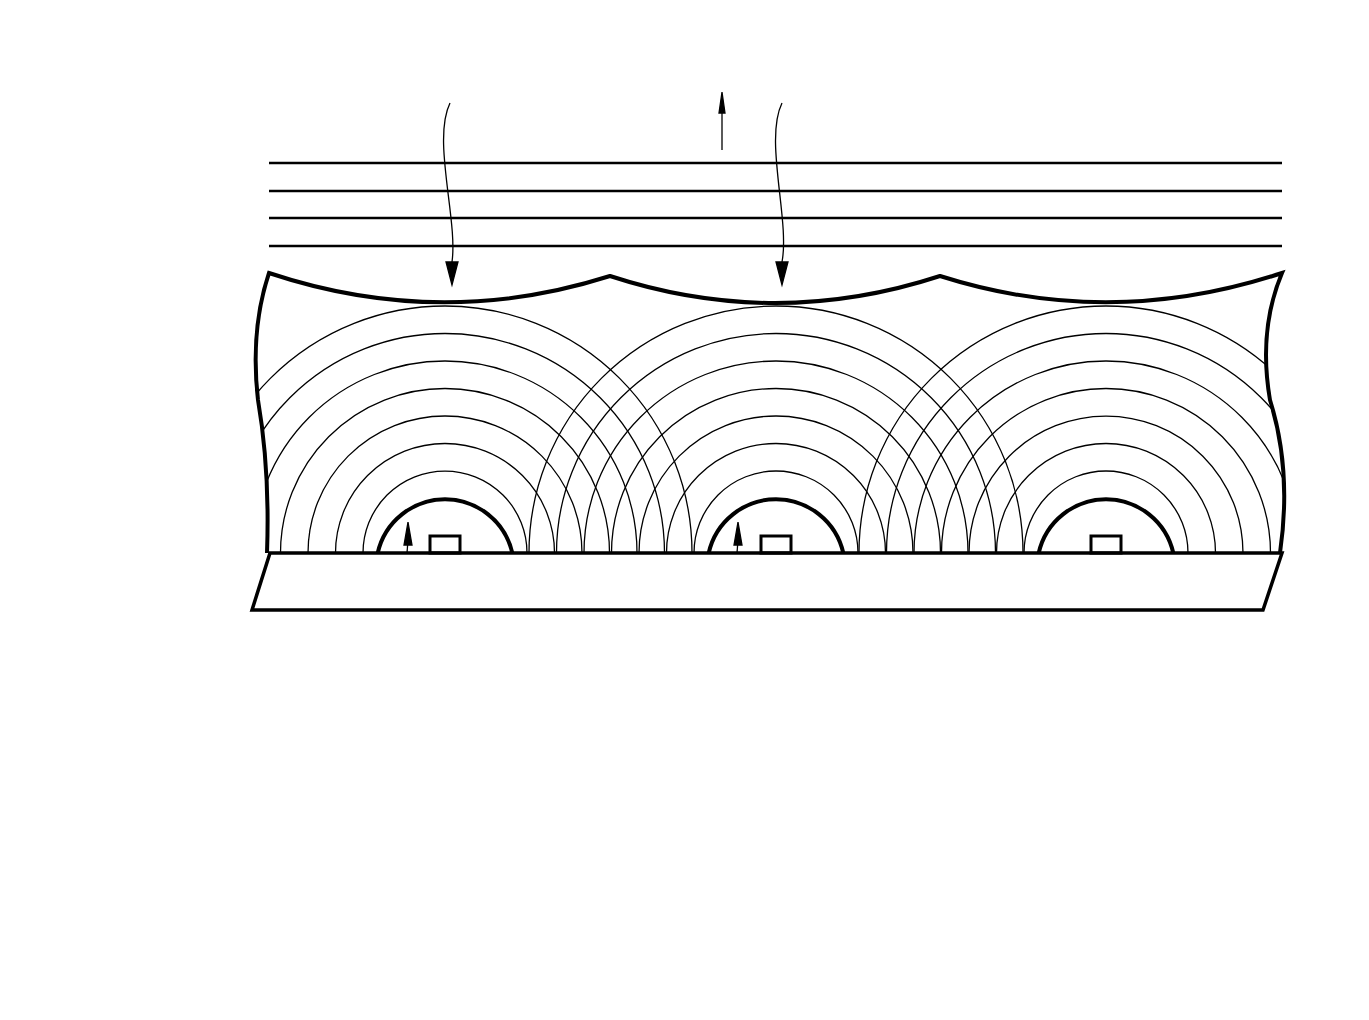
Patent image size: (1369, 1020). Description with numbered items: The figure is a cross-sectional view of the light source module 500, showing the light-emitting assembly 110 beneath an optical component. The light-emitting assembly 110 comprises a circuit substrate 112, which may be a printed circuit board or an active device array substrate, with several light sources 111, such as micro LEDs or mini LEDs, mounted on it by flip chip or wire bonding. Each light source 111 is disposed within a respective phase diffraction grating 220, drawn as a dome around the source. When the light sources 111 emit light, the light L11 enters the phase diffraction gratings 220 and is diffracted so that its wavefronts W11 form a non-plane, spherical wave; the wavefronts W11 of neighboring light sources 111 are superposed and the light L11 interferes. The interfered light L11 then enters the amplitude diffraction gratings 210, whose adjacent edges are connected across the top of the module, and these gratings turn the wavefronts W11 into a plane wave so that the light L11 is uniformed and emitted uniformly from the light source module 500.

The light source module 500 is at (124, 97).
The amplitude diffraction grating 210 is at (613, 176).
The phase diffraction grating 220 is at (407, 553).
The wavefront W11 is at (1074, 163).
The light L11 is at (120, 322).
The light-emitting assembly 110 is at (767, 622).
The light source 111 is at (447, 553).
The circuit substrate 112 is at (1188, 598).